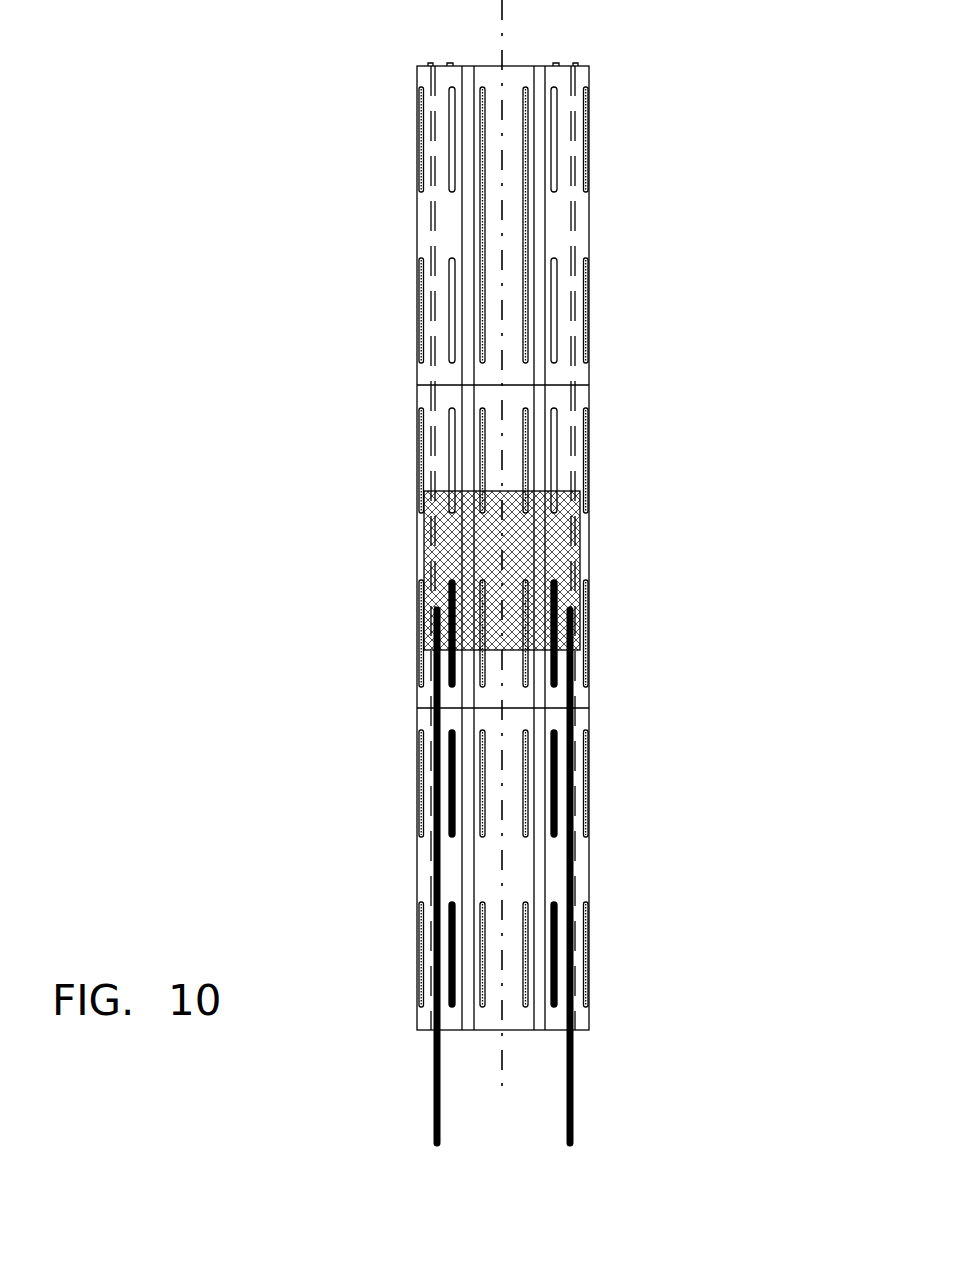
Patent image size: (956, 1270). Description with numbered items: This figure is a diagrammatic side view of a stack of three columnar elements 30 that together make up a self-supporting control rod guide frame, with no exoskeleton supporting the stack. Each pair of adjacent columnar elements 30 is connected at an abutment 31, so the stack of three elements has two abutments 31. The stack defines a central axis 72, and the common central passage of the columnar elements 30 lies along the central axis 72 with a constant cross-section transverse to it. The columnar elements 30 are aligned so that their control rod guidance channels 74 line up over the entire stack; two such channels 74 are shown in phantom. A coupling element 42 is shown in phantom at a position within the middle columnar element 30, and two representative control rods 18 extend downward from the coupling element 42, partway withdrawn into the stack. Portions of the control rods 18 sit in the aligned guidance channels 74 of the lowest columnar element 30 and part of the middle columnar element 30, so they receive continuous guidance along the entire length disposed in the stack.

The columnar element 30 is at (312, 104).
The abutment 31 is at (418, 385).
The control rod guidance channel 74 is at (438, 463).
The coupling element 42 is at (555, 527).
The control rod 18 is at (435, 1115).
The central axis 72 is at (504, 17).